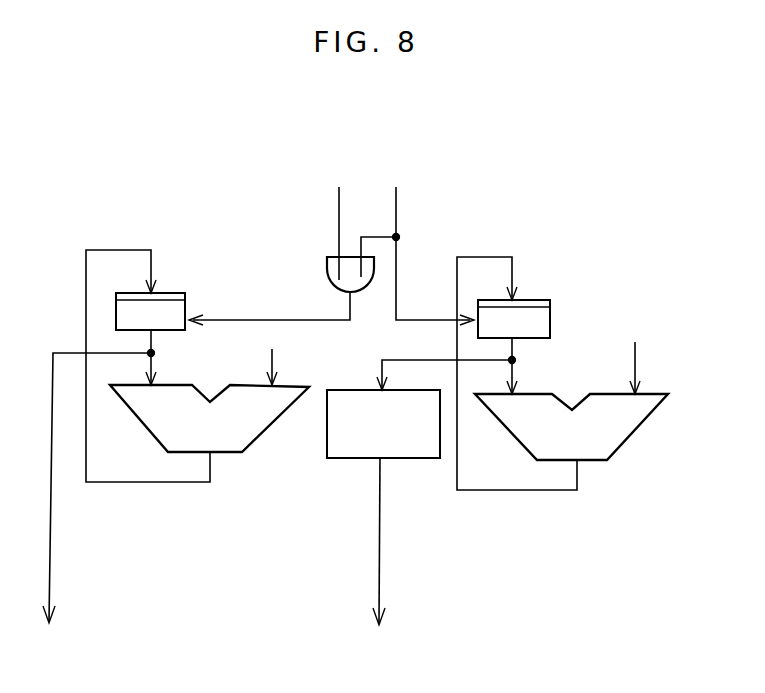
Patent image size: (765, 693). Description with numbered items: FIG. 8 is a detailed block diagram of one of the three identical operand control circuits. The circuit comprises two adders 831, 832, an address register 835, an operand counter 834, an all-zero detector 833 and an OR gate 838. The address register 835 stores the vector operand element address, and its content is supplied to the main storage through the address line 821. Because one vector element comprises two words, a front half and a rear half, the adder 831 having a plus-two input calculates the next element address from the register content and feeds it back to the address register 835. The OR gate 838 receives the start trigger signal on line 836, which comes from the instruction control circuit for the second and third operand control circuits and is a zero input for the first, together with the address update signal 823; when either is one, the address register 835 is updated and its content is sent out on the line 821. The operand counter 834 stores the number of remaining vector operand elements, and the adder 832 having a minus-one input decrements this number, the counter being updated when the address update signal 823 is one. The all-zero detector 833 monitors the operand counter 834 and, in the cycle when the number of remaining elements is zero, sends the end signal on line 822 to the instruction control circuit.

The address line 821 is at (51, 562).
The end signal line 822 is at (380, 568).
The address update signal 823 is at (397, 195).
The adder 831 is at (267, 435).
The adder 832 is at (637, 435).
The all-zero detector 833 is at (403, 458).
The operand counter 834 is at (543, 302).
The address register 835 is at (187, 290).
The line (start trigger signal) 836 is at (339, 212).
The OR gate 838 is at (327, 272).